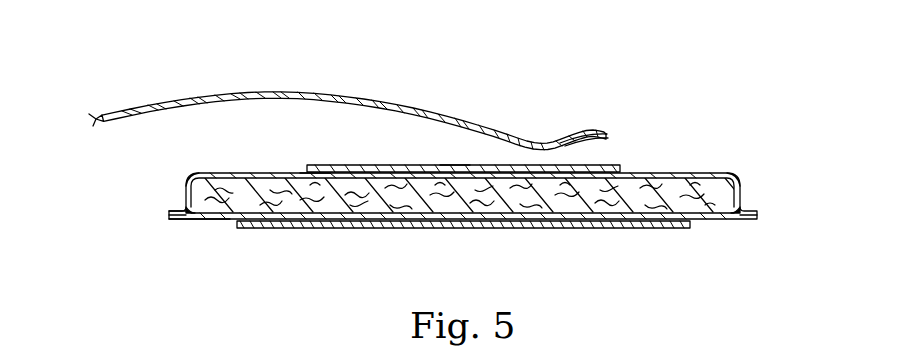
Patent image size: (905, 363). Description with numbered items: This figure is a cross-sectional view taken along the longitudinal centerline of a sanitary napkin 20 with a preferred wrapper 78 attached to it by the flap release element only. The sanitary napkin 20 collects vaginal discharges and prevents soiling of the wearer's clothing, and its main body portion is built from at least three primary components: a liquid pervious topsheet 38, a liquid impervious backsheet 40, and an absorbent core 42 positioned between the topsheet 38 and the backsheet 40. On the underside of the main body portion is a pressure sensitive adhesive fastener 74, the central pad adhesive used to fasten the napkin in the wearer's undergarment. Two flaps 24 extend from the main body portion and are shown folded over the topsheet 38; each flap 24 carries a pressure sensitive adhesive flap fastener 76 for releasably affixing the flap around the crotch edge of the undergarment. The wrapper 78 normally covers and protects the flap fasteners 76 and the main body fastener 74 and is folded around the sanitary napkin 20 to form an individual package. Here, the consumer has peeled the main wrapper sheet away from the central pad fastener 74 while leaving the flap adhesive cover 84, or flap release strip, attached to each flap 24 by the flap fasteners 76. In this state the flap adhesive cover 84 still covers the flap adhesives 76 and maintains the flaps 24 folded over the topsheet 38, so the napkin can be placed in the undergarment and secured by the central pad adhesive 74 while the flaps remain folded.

The sanitary napkin 20 is at (752, 176).
The flap 24 is at (313, 170).
The liquid pervious topsheet 38 is at (226, 172).
The liquid impervious backsheet 40 is at (222, 220).
The absorbent core 42 is at (705, 180).
The pressure sensitive adhesive fastener 74 is at (601, 227).
The flap fastener 76 is at (413, 163).
The wrapper 78 is at (294, 96).
The flap adhesive cover 84 is at (452, 163).